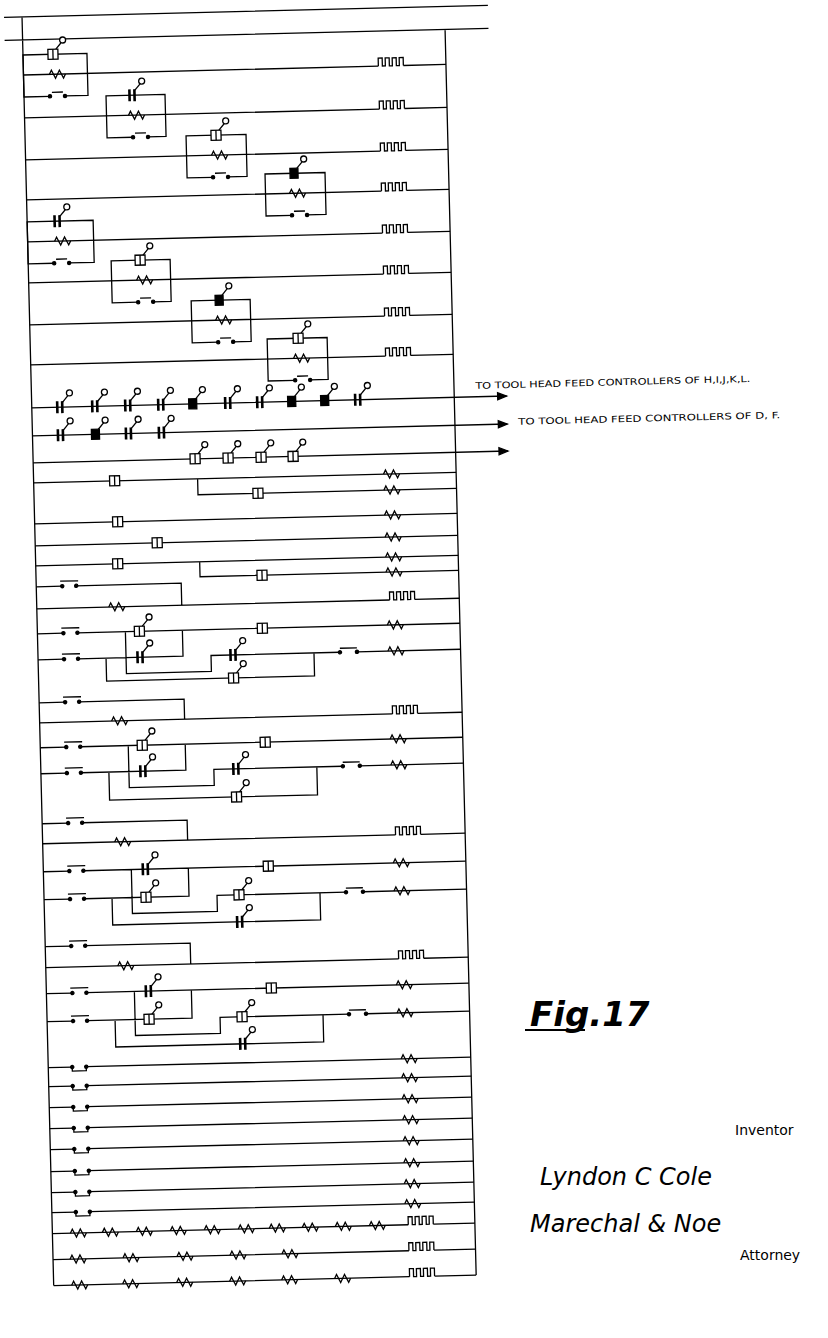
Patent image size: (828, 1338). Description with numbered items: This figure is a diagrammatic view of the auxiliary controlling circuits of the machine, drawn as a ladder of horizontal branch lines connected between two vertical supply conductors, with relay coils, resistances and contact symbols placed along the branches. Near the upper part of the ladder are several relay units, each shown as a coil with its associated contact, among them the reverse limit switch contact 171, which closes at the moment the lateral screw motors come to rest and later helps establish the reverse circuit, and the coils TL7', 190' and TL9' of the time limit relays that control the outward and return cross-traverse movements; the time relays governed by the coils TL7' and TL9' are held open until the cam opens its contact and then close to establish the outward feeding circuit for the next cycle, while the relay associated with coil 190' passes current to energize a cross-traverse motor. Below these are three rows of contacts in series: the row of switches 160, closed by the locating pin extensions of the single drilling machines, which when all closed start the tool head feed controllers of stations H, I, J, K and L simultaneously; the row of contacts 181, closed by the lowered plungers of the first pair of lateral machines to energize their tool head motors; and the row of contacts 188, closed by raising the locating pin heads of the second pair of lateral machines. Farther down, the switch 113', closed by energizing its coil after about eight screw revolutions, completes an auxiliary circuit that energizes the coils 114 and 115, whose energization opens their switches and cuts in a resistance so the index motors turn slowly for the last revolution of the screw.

The reverse limit switch contact 171 is at (127, 95).
The time limit relay coil TL7' is at (60, 234).
The time limit relay coil 190' is at (141, 273).
The time limit relay coil TL9' is at (221, 313).
The switches 160 is at (363, 391).
The contacts 181 is at (52, 426).
The contacts 188 is at (174, 457).
The switch 113' is at (131, 473).
The coil 114 is at (385, 486).
The coil 115 is at (386, 500).